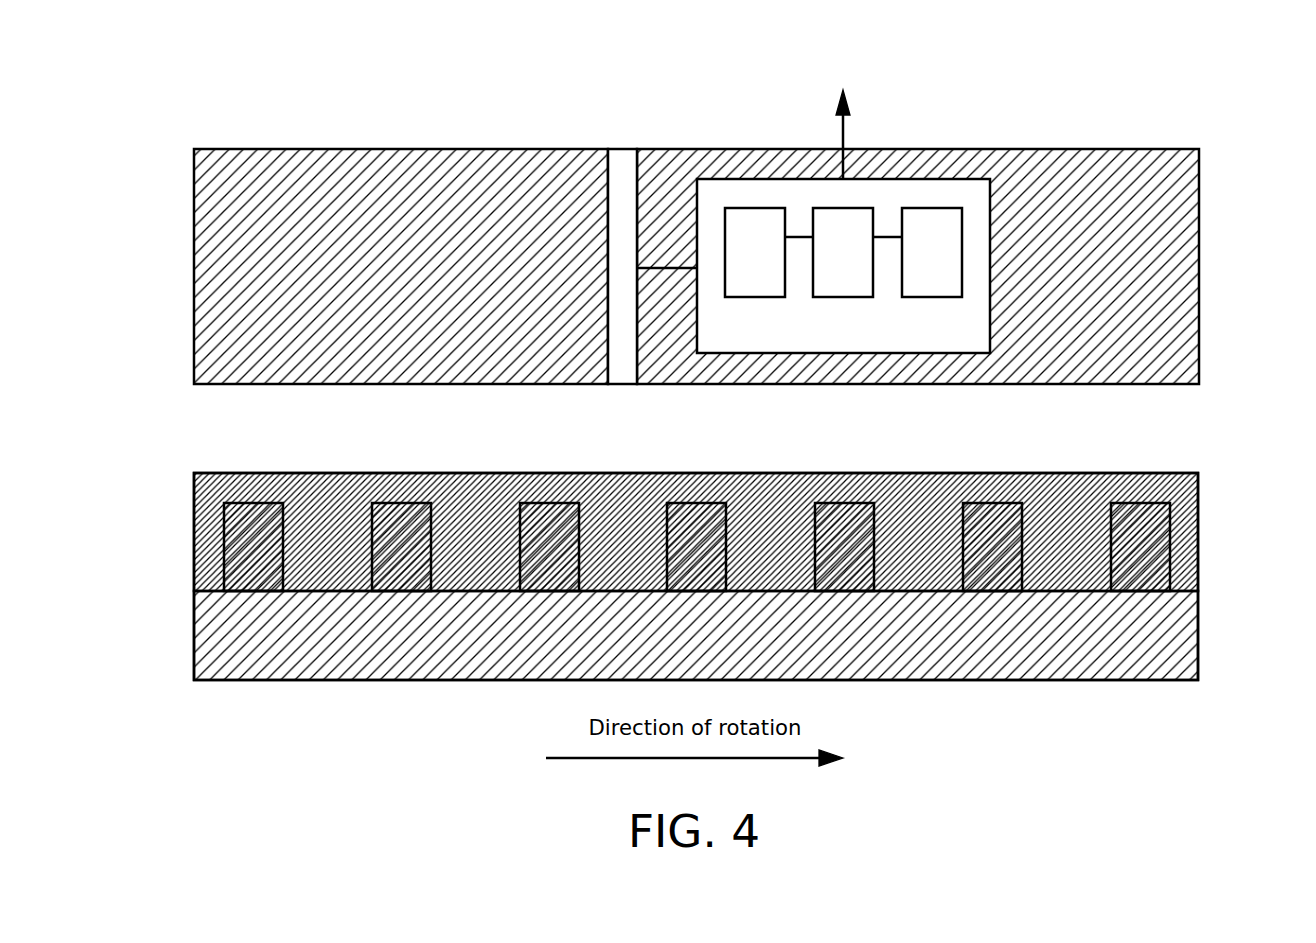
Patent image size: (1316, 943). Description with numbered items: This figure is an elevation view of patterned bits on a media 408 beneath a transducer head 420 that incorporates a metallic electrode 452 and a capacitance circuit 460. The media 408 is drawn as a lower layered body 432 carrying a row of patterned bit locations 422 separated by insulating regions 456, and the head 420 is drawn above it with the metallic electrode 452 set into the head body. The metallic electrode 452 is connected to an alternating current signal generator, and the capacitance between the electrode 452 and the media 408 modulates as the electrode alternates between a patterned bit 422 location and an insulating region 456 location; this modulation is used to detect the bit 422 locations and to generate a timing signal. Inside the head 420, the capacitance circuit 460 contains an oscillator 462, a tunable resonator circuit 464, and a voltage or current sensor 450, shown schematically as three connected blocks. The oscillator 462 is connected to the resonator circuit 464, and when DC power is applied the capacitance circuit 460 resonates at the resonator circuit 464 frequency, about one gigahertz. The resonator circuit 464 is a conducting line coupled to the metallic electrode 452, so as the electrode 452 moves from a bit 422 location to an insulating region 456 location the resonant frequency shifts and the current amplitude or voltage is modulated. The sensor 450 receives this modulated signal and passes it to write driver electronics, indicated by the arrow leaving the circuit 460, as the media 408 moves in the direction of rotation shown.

The media 408 is at (227, 680).
The transducer head 420 is at (696, 266).
The bit location 422 is at (1170, 529).
The substrate layer of medium 432 is at (696, 635).
The voltage or current sensor 450 is at (932, 252).
The metallic electrode 452 is at (632, 148).
The insulating region 456 is at (696, 532).
The capacitance circuit 460 is at (813, 192).
The oscillator 462 is at (769, 252).
The tunable resonator circuit 464 is at (857, 252).